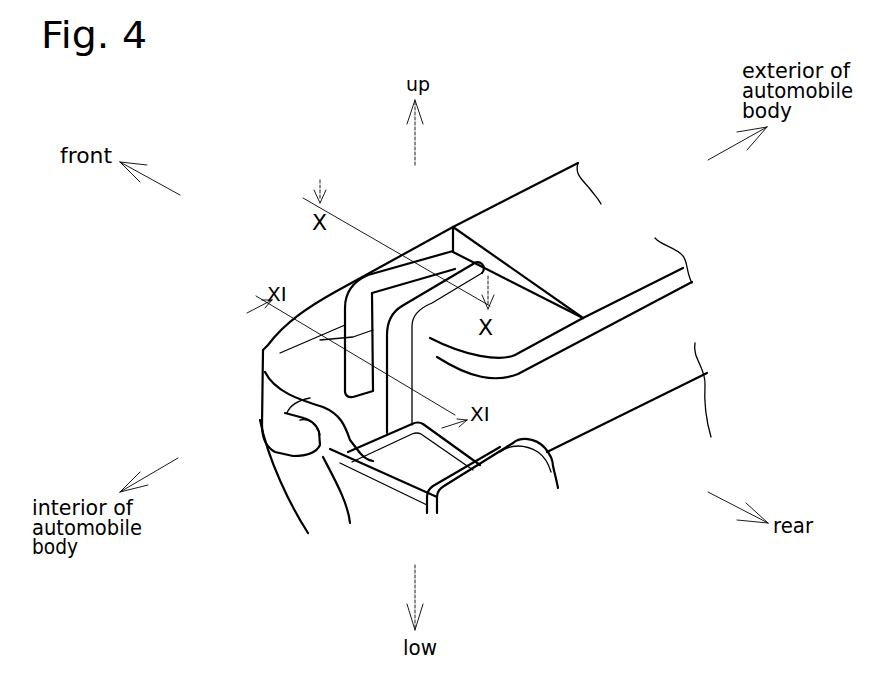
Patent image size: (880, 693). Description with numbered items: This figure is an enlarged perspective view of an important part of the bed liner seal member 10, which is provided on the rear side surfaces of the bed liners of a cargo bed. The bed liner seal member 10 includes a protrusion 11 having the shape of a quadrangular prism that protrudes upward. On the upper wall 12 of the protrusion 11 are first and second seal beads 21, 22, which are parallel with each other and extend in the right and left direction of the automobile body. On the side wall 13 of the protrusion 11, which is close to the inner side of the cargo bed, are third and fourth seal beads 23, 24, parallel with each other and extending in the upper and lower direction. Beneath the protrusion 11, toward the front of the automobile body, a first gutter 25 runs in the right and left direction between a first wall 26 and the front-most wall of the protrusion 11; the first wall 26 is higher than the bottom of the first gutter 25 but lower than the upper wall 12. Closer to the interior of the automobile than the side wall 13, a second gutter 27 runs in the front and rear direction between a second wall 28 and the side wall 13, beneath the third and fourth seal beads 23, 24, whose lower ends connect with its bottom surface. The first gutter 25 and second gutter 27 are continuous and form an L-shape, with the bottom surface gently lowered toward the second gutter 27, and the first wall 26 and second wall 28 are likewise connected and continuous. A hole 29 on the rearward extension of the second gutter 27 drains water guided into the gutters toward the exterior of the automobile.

The bed liner seal member 10 is at (626, 158).
The protrusion 11 is at (406, 281).
The upper wall 12 is at (453, 268).
The side wall 13 is at (433, 349).
The first seal bead 21 is at (393, 273).
The second seal bead 22 is at (436, 294).
The third seal bead 23 is at (343, 342).
The fourth seal bead 24 is at (307, 420).
The first gutter 25 is at (337, 367).
The first wall 26 is at (400, 322).
The second gutter 27 is at (362, 425).
The second wall 28 is at (303, 408).
The hole 29 is at (420, 465).